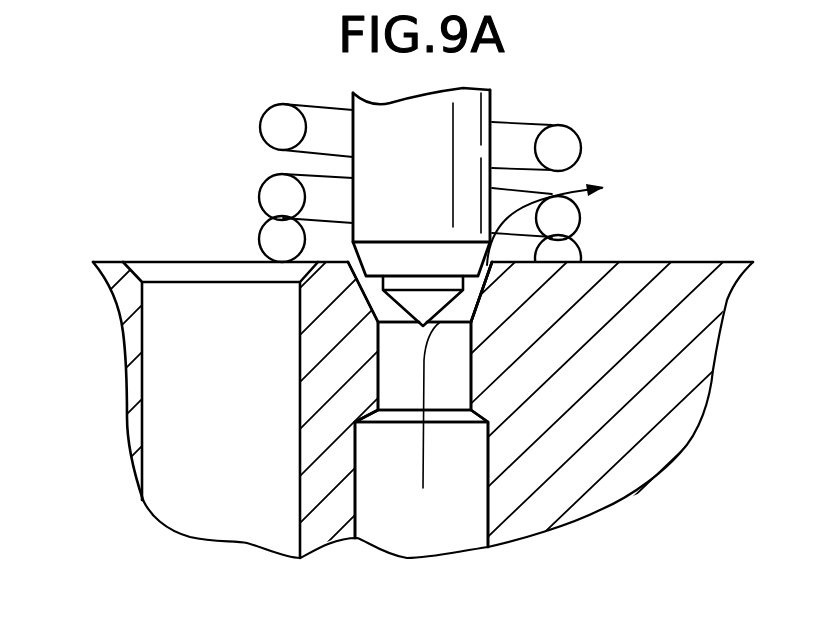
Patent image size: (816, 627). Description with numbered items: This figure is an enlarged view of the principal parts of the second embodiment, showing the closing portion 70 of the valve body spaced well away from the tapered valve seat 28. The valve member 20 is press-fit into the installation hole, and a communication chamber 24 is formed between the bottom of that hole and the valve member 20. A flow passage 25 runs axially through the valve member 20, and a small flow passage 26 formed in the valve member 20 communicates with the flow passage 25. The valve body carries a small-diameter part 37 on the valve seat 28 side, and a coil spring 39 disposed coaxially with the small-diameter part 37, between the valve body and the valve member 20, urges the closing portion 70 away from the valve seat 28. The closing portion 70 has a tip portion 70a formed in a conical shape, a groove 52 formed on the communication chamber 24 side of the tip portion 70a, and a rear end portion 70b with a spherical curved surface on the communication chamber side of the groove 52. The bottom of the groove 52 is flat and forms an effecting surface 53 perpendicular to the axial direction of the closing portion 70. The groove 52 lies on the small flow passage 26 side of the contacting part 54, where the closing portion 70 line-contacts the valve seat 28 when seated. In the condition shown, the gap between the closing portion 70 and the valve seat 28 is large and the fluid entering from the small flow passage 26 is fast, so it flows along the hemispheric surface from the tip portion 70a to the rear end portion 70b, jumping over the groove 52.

The valve member 20 is at (682, 288).
The communication chamber 24 is at (772, 119).
The flow passage 25 is at (483, 502).
The small flow passage 26 is at (468, 384).
The valve seat 28 is at (368, 296).
The small-diameter part 37 is at (457, 158).
The coil spring 39 is at (277, 127).
The groove 52 is at (380, 291).
The effecting surface 53 is at (490, 303).
The contacting part 54 is at (478, 306).
The closing portion 70 is at (466, 303).
The tip portion 70a is at (415, 308).
The rear end portion 70b is at (352, 267).